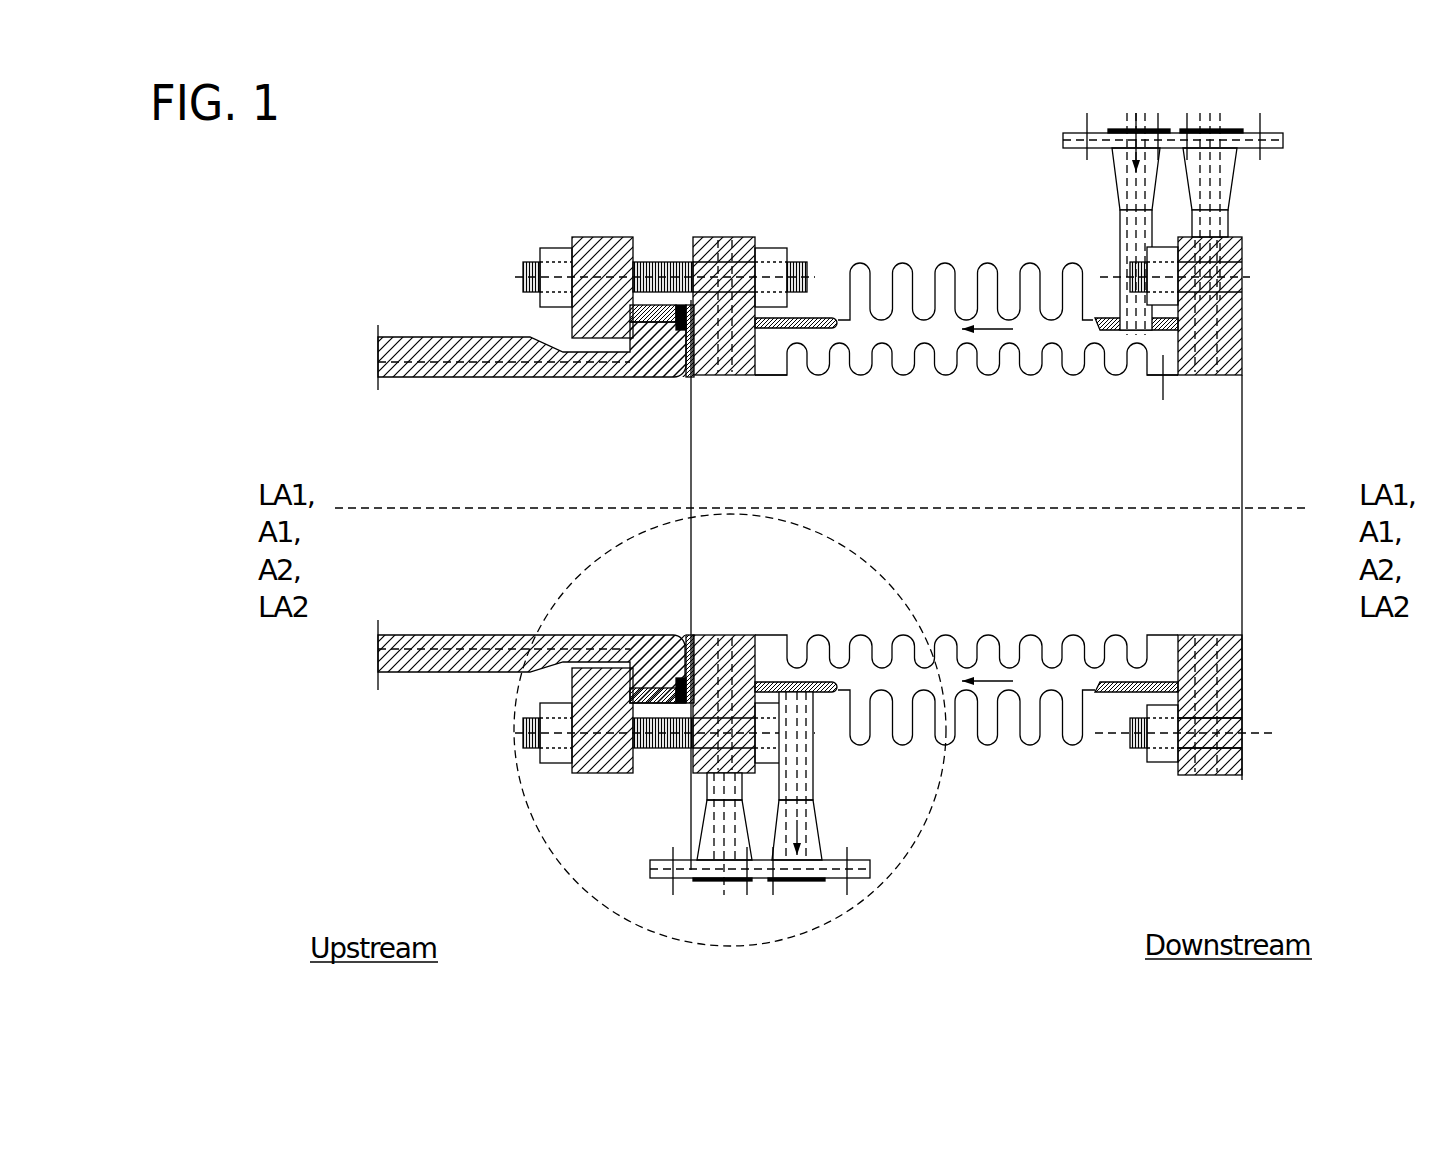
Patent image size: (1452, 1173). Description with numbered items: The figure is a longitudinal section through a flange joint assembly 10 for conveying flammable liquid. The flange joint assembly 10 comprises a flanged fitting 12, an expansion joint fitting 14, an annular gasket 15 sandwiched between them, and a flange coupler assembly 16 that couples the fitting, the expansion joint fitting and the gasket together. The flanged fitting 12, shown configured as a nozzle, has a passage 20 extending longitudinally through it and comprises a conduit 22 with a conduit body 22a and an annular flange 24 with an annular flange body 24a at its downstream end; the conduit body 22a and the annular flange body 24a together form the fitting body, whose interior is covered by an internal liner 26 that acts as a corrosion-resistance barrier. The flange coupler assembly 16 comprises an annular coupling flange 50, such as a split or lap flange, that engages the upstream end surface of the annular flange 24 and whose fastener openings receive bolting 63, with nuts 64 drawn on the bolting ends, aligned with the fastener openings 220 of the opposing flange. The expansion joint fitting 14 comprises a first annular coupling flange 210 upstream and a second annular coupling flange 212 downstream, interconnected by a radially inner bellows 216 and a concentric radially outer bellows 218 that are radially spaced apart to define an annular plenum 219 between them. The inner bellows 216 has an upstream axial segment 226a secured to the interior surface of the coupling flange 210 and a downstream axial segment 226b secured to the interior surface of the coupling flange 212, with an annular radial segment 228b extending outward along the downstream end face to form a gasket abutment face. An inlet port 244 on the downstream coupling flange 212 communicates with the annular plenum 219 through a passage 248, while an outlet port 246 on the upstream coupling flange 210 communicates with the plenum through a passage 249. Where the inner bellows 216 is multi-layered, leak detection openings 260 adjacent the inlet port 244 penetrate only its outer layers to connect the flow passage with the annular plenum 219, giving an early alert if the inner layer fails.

The flange joint assembly 10 is at (858, 158).
The flanged fitting 12 is at (447, 310).
The expansion joint fitting 14 is at (966, 240).
The annular gasket 15 is at (680, 390).
The flange coupler assembly 16 is at (741, 232).
The passage 20 is at (441, 466).
The conduit 22 is at (438, 676).
The conduit body 22a is at (447, 650).
The annular flange 24 is at (652, 625).
The annular flange body 24a is at (672, 655).
The internal liner 26 is at (530, 380).
The annular coupling flange 50 is at (594, 238).
The bolting 63 is at (660, 262).
The nut 64 is at (557, 250).
The first annular coupling flange 210 is at (708, 240).
The second annular coupling flange 212 is at (1237, 238).
The radially inner bellows 216 is at (990, 378).
The radially outer bellows 218 is at (905, 262).
The annular plenum 219 is at (1040, 675).
The fastener openings 220 is at (727, 240).
The axial segment 226a is at (745, 378).
The axial segment 226b is at (1240, 378).
The annular radial segment 228b is at (716, 378).
The inlet port 244 is at (1117, 132).
The outlet port 246 is at (717, 880).
The passage 248 is at (1243, 330).
The passage 249 is at (595, 775).
The leak detection openings 260 is at (1140, 399).